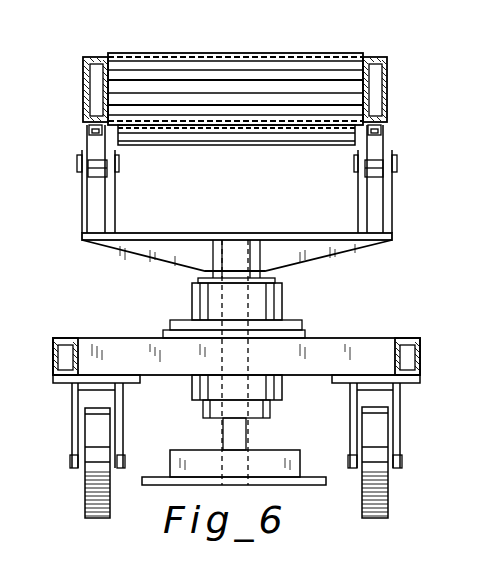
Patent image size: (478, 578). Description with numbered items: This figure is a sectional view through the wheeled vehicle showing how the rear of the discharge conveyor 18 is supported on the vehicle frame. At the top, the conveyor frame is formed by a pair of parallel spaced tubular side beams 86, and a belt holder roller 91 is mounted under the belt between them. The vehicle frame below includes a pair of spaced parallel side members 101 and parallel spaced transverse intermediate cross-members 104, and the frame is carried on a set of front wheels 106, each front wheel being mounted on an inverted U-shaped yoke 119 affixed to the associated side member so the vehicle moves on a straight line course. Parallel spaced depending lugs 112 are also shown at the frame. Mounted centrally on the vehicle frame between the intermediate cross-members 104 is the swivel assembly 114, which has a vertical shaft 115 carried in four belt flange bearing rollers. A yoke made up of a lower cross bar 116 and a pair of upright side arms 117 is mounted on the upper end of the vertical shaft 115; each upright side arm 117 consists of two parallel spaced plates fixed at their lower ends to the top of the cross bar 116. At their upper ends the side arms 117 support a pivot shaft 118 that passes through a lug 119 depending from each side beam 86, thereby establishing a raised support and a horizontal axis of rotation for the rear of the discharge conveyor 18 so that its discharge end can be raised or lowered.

The discharge conveyor 18 is at (217, 51).
The side beams 86 is at (83, 80).
The belt holder roller 91 is at (274, 146).
The lug 119 is at (88, 143).
The pivot shaft 118 is at (96, 172).
The upright side arms 117 is at (80, 195).
The lower cross bar 116 is at (305, 253).
The swivel assembly 114 is at (287, 287).
The intermediate cross-members 104 is at (322, 355).
The side members 101 is at (420, 364).
The vertical shaft 115 is at (246, 434).
The depending lugs 112 is at (72, 405).
The front wheels 106 is at (88, 478).